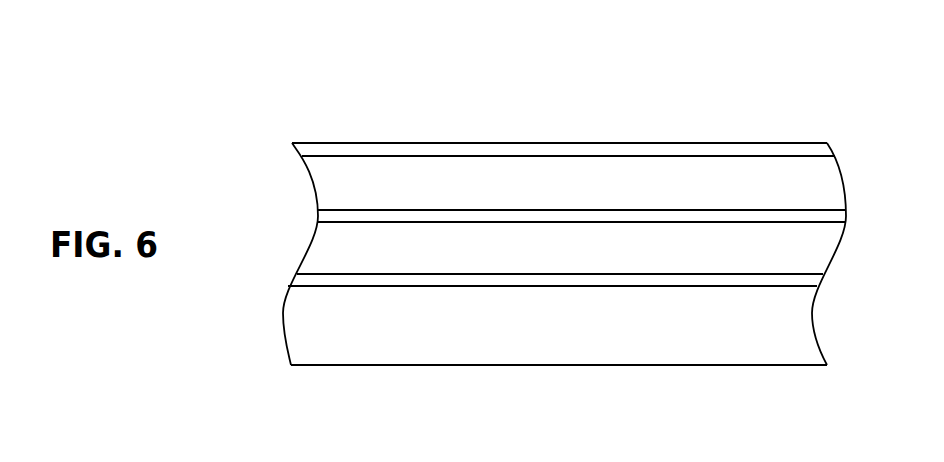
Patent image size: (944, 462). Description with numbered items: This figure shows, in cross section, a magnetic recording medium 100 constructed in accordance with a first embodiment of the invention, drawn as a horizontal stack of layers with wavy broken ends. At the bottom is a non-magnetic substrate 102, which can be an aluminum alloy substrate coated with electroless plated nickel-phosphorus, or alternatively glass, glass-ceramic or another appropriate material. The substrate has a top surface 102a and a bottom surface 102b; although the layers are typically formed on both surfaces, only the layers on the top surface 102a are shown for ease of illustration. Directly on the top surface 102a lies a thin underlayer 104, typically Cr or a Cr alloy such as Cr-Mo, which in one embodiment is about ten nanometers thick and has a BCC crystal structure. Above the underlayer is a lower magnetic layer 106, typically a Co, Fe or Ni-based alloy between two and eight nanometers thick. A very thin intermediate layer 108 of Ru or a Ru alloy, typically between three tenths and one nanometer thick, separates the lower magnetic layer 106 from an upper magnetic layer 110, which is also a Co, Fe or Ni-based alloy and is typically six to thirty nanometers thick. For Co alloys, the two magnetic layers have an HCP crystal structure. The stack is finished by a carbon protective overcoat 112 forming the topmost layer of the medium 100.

The magnetic recording medium 100 is at (349, 106).
The non-magnetic substrate 102 is at (620, 345).
The top surface of substrate 102a is at (463, 288).
The bottom surface of substrate 102b is at (482, 365).
The underlayer 104 is at (750, 278).
The lower magnetic layer 106 is at (627, 265).
The intermediate layer 108 is at (410, 215).
The upper magnetic layer 110 is at (598, 198).
The carbon protective overcoat 112 is at (668, 150).